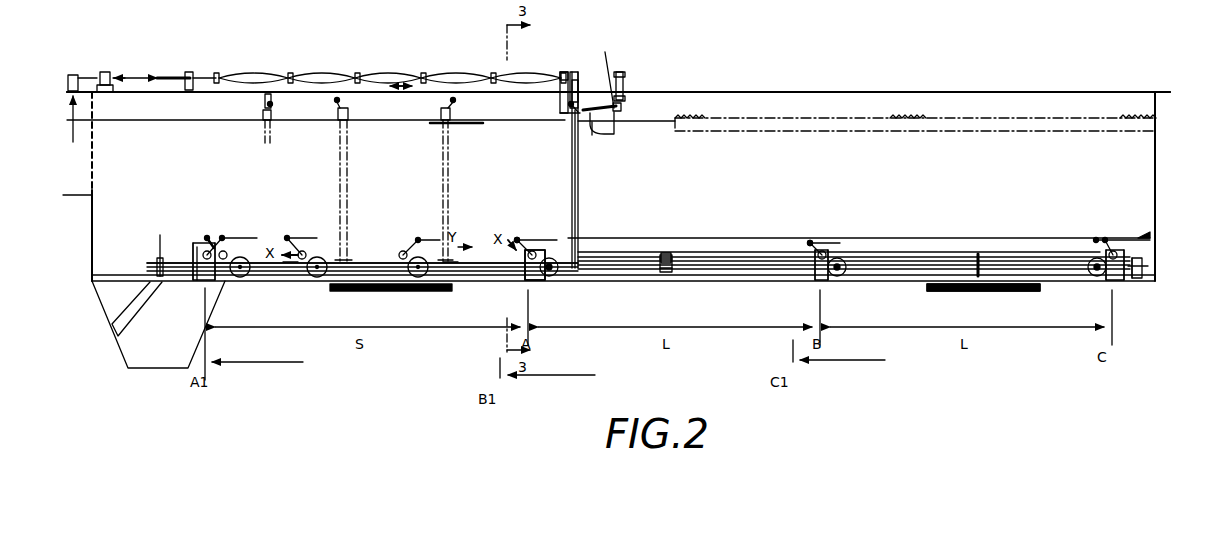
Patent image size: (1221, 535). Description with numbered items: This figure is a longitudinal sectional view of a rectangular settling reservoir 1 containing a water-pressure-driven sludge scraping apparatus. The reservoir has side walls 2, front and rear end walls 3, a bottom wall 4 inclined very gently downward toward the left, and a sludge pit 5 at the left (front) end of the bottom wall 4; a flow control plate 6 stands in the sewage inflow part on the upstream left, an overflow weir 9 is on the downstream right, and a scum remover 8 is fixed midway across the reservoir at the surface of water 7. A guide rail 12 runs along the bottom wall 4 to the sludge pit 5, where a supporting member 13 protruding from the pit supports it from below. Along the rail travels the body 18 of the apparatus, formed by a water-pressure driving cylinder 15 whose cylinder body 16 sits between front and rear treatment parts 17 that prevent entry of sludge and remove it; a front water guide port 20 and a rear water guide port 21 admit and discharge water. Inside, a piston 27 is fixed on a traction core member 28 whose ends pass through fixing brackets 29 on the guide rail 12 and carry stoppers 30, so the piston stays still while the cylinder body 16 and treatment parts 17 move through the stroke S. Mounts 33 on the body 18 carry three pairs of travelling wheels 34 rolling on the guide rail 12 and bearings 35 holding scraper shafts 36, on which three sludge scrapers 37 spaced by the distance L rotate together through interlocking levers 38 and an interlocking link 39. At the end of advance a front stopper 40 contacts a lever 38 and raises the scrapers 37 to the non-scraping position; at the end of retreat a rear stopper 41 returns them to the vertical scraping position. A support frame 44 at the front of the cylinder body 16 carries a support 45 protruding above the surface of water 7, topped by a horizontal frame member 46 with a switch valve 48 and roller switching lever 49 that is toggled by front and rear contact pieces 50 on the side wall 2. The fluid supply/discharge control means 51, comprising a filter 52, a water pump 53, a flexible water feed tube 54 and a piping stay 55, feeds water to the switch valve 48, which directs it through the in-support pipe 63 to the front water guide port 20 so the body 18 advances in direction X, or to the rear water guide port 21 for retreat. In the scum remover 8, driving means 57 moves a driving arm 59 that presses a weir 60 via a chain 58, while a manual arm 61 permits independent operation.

The rectangular settling reservoir 1 is at (945, 88).
The side walls 2 is at (893, 92).
The end walls 3 is at (1152, 158).
The bottom wall 4 is at (400, 288).
The sludge pit 5 is at (137, 350).
The flow control plate 6 is at (95, 156).
The surface of water 7 is at (150, 120).
The scum remover 8 is at (623, 103).
The overflow weir 9 is at (790, 131).
The guide rail 12 is at (450, 284).
The supporting member 13 is at (132, 312).
The water-pressure driving cylinder 15 is at (758, 284).
The cylinder body 16 is at (718, 272).
The treatment parts 17 is at (640, 275).
The body 18 is at (948, 251).
The front water guide port 20 is at (673, 256).
The rear water guide port 21 is at (980, 254).
The piston 27 is at (668, 274).
The traction core member 28 is at (265, 272).
The fixing brackets 29 is at (160, 235).
The stopper 30 is at (157, 262).
The mount 33 is at (533, 282).
The travelling wheels 34 is at (554, 275).
The bearings 35 is at (533, 250).
The scraper shaft 36 is at (207, 251).
The sludge scraper 37 is at (190, 240).
The interlocking levers 38 is at (518, 238).
The interlocking link 39 is at (655, 238).
The front stopper 40 is at (214, 246).
The rear stopper 41 is at (1100, 238).
The support frame 44 is at (560, 272).
The support 45 is at (579, 186).
The horizontal frame member 46 is at (265, 128).
The switch valve 48 is at (263, 116).
The switching lever 49 is at (272, 106).
The contact piece 50 is at (263, 101).
The fluid supply/discharge control means 51 is at (118, 80).
The filter 52 is at (75, 75).
The water pump 53 is at (106, 72).
The flexible water feed tube 54 is at (315, 75).
The piping stay 55 is at (560, 96).
The driving means 57 is at (625, 76).
The chain 58 is at (622, 106).
The driving arm 59 is at (616, 122).
The weir 60 is at (596, 135).
The manual arm 61 is at (608, 56).
The in-support pipe 63 is at (579, 216).